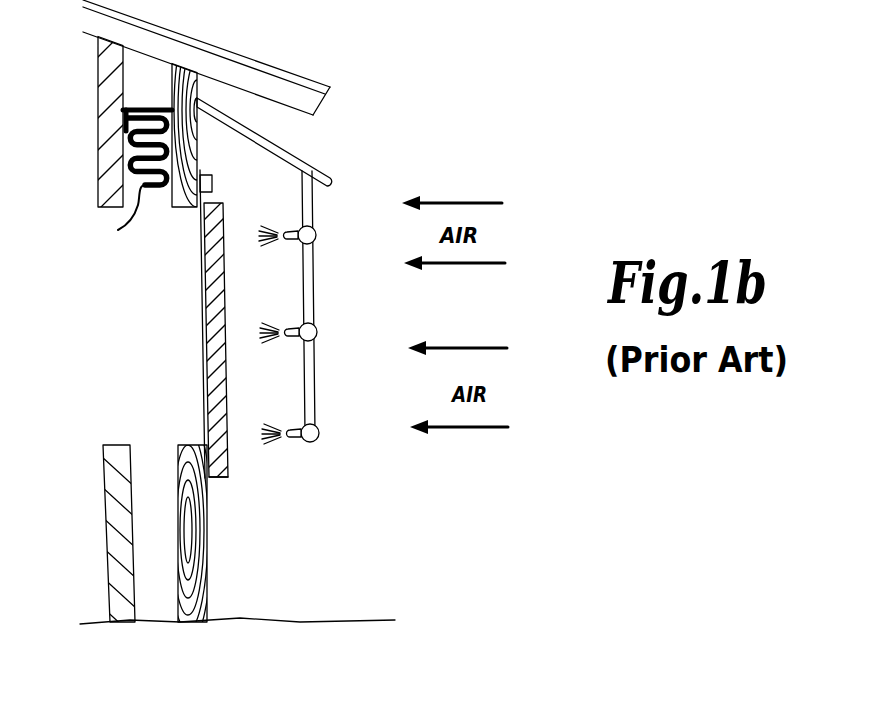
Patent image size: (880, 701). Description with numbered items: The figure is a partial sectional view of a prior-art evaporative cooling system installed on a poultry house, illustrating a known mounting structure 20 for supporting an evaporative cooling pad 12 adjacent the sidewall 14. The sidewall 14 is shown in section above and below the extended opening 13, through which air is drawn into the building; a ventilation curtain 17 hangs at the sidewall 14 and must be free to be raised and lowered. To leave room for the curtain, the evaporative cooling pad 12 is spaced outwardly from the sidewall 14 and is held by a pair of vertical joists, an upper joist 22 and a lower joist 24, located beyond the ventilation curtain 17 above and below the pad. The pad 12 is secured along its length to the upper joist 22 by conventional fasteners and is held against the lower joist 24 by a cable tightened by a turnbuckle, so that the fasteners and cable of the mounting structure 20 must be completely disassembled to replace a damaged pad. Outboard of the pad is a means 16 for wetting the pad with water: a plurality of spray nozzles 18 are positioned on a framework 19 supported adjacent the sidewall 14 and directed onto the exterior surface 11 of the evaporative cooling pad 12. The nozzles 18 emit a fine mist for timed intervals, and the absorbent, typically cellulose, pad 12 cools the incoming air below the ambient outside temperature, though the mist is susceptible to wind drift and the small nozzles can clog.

The exterior surface 11 is at (228, 390).
The evaporative cooling pad 12 is at (222, 477).
The extended opening 13 is at (120, 366).
The sidewall 14 is at (108, 83).
The means for wetting the evaporative cooling pad 16 is at (347, 187).
The ventilation curtain 17 is at (118, 230).
The spray nozzles 18 is at (316, 445).
The framework 19 is at (302, 290).
The mounting structure 20 is at (216, 144).
The upper joist 22 is at (170, 96).
The lower joist 24 is at (206, 530).